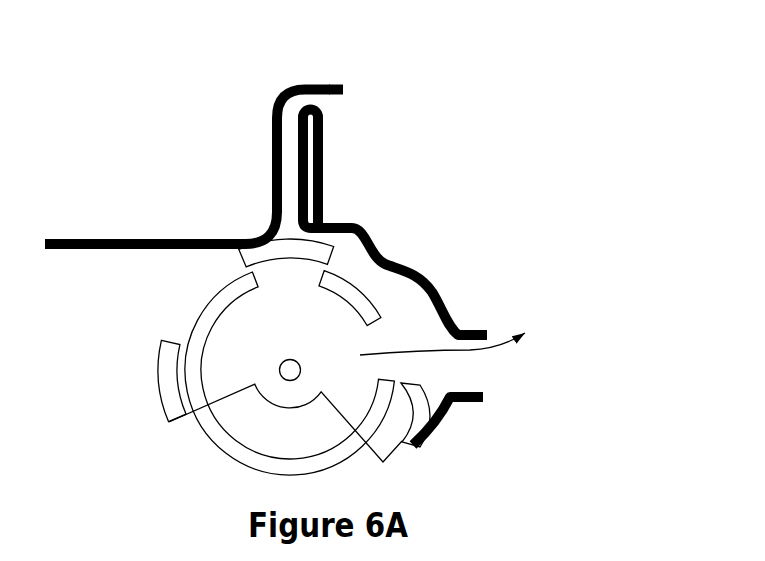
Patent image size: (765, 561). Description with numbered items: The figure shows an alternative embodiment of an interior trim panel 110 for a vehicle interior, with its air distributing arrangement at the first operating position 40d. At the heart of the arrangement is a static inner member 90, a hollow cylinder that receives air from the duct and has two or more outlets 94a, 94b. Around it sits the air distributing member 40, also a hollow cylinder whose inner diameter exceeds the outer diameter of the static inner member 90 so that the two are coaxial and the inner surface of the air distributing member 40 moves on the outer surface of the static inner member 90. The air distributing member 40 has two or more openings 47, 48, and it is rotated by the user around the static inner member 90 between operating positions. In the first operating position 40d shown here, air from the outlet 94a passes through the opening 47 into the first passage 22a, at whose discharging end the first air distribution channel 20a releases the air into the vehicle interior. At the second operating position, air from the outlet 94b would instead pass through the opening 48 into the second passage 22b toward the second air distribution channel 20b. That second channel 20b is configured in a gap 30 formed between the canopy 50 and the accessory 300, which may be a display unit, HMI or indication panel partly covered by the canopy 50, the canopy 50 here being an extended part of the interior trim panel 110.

The interior trim panel 110 is at (205, 165).
The canopy 50 is at (306, 84).
The second air distribution channel 20b is at (347, 91).
The accessory 300 is at (334, 157).
The gap 30 is at (292, 132).
The second passage 22b is at (308, 184).
The outlet 94b is at (313, 283).
The opening 48 is at (243, 267).
The static inner member 90 is at (355, 329).
The outlet 94a is at (382, 376).
The opening 47 is at (410, 378).
The first air distribution channel 20a is at (489, 396).
The first passage 22a is at (483, 398).
The air distributing member 40 is at (317, 361).
The first operating position 40d is at (150, 400).